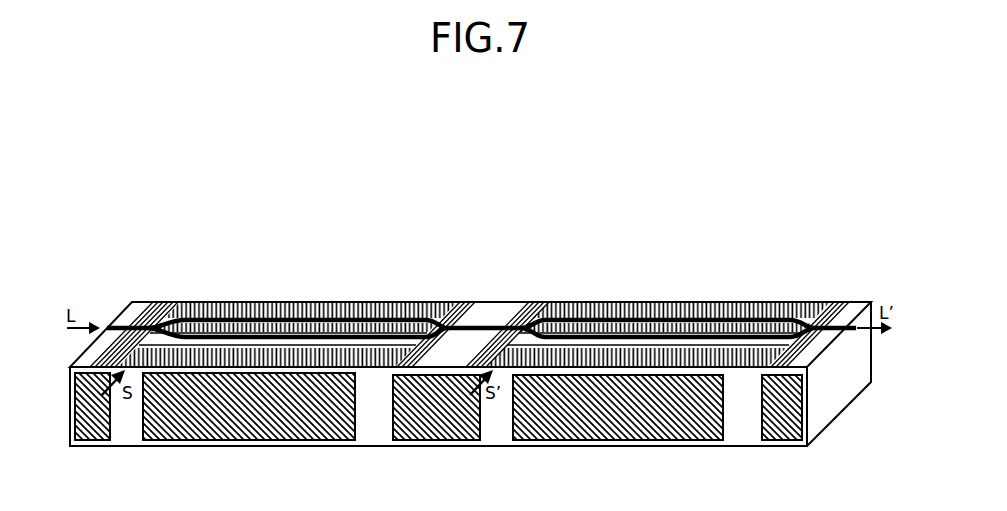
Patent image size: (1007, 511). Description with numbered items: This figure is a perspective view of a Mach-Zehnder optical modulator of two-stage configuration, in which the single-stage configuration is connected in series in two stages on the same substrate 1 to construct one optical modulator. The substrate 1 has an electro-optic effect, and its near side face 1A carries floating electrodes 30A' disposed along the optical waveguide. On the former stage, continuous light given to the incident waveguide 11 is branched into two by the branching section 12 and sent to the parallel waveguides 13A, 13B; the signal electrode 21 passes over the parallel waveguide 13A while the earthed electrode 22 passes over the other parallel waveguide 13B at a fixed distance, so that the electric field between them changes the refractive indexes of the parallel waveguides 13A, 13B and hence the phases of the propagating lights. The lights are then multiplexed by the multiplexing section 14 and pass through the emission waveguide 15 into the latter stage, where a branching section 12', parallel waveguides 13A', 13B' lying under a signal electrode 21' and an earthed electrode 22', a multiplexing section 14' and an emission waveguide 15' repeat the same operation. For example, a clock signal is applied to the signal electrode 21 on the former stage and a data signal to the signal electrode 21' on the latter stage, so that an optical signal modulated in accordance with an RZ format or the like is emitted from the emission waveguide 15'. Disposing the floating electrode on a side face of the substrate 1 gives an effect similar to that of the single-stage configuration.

The substrate 1 is at (843, 413).
The side face 1A is at (786, 440).
The incident waveguide 11 is at (120, 302).
The branching section 12 is at (158, 301).
The parallel waveguide 13A is at (290, 296).
The parallel waveguide 13B is at (305, 300).
The multiplexing section 14 is at (432, 300).
The emission waveguide 15 is at (470, 281).
The branching portion of second modulator 12' is at (513, 299).
The branch waveguide of second modulator 13A' is at (653, 295).
The branch waveguide of second modulator 13B' is at (667, 299).
The combining portion of second modulator 14' is at (812, 302).
The output optical waveguide of second modulator 15' is at (862, 301).
The signal electrode 21 is at (288, 293).
The earthed electrode 22 is at (277, 300).
The signal electrode 21' is at (660, 292).
The ground electrode of second modulator 22' is at (648, 299).
The thin-walled portions 30A' is at (438, 433).